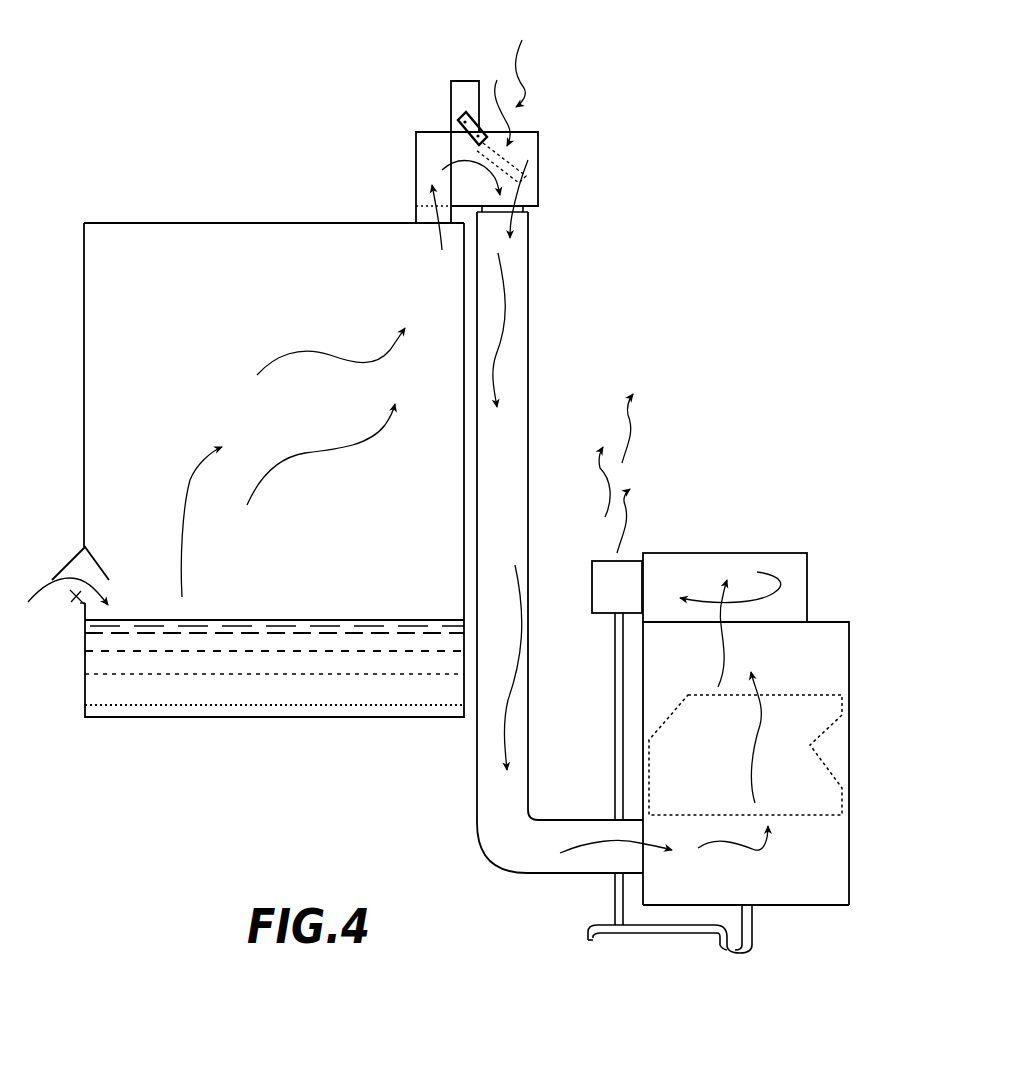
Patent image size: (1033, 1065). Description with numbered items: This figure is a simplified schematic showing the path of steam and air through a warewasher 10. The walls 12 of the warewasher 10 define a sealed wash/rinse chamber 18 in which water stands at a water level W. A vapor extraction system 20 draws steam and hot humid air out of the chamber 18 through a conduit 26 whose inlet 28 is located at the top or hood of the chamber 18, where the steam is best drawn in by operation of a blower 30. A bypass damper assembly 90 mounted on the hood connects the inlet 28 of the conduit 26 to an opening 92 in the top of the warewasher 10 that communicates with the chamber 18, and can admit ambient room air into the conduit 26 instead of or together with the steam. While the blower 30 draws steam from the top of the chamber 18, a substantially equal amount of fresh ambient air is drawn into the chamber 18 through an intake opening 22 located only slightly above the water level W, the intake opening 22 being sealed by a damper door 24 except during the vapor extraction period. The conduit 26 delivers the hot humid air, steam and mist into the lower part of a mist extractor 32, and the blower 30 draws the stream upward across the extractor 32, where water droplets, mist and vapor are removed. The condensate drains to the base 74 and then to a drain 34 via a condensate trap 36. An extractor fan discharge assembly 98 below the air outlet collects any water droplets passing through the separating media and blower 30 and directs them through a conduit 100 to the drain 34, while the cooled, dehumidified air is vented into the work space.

The warewasher 10 is at (113, 206).
The walls 12 is at (84, 328).
The wash/rinse chamber 18 is at (293, 435).
The vapor extraction system 20 is at (640, 772).
The intake opening 22 is at (80, 603).
The damper door 24 is at (67, 560).
The conduit 26 is at (521, 317).
The inlet 28 is at (521, 220).
The blower 30 is at (706, 552).
The mist extractor 32 is at (745, 724).
The drain 34 is at (588, 946).
The condensate trap 36 is at (738, 955).
The base 74 is at (785, 906).
The bypass damper assembly 90 is at (540, 145).
The opening 92 is at (424, 232).
The extractor fan discharge assembly 98 is at (592, 592).
The conduit 100 is at (615, 645).
The water level W is at (255, 613).